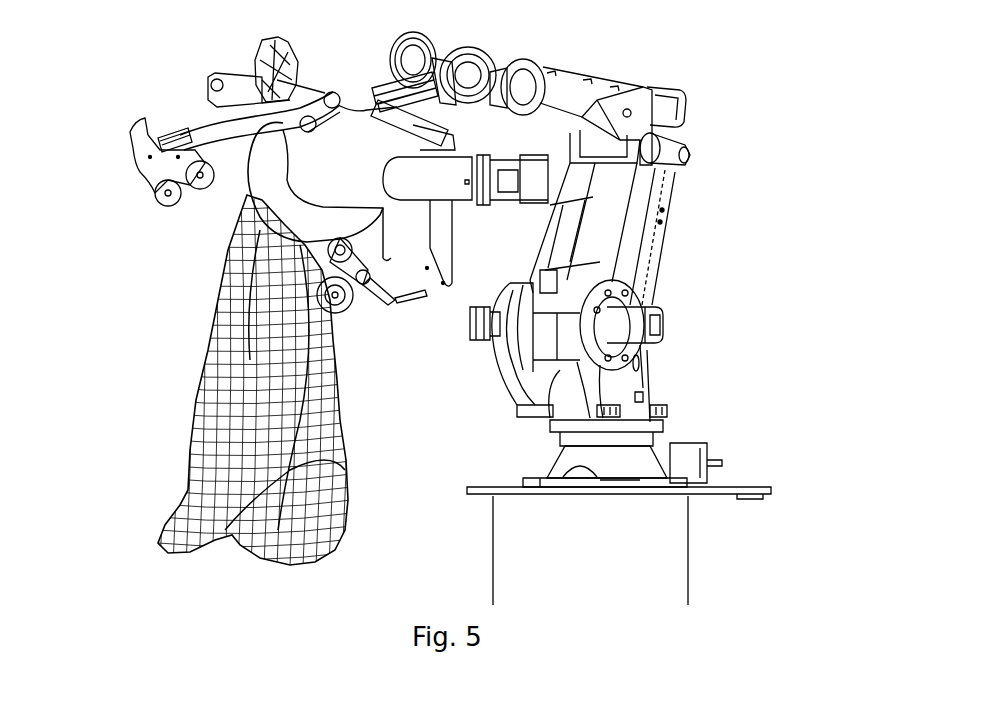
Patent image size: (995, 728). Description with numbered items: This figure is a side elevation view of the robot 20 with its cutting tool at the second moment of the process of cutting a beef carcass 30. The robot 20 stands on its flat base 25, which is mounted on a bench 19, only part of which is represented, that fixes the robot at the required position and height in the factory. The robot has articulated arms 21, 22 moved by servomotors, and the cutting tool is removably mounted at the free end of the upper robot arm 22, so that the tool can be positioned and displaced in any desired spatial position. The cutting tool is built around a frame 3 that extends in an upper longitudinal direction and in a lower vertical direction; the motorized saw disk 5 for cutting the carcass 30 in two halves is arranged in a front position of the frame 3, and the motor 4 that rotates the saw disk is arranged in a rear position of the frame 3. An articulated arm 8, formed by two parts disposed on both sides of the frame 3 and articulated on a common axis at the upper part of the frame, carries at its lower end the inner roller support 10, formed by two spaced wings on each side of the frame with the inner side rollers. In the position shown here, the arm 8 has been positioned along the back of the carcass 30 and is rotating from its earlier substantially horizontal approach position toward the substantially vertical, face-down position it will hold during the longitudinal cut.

The frame 3 is at (428, 281).
The motor 4 is at (503, 210).
The motorized saw disk 5 is at (268, 196).
The articulated arm 8 is at (225, 119).
The inner roller support 10 is at (140, 165).
The bench 19 is at (692, 555).
The robot 20 is at (578, 246).
The robot arm 21 is at (660, 244).
The upper robot arm 22 is at (572, 78).
The flat base 25 is at (733, 491).
The carcass 30 is at (183, 391).